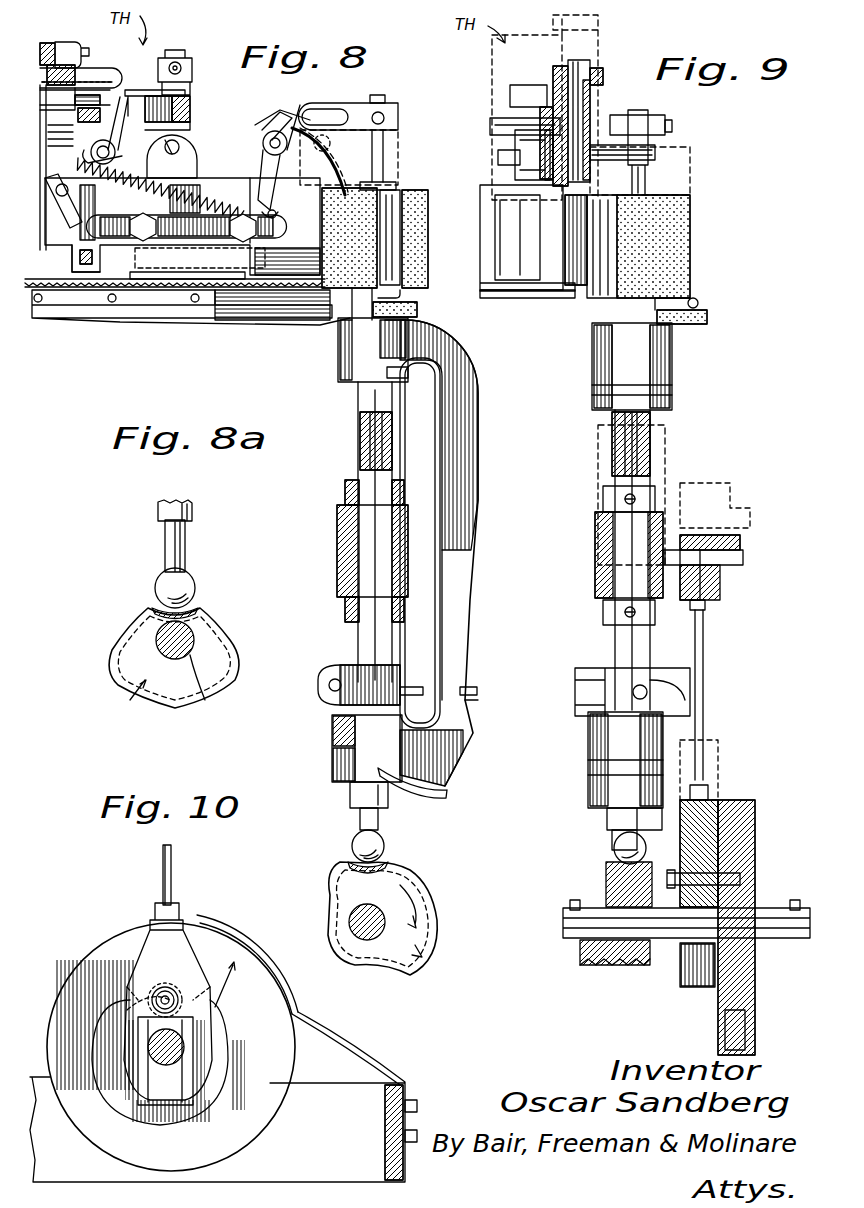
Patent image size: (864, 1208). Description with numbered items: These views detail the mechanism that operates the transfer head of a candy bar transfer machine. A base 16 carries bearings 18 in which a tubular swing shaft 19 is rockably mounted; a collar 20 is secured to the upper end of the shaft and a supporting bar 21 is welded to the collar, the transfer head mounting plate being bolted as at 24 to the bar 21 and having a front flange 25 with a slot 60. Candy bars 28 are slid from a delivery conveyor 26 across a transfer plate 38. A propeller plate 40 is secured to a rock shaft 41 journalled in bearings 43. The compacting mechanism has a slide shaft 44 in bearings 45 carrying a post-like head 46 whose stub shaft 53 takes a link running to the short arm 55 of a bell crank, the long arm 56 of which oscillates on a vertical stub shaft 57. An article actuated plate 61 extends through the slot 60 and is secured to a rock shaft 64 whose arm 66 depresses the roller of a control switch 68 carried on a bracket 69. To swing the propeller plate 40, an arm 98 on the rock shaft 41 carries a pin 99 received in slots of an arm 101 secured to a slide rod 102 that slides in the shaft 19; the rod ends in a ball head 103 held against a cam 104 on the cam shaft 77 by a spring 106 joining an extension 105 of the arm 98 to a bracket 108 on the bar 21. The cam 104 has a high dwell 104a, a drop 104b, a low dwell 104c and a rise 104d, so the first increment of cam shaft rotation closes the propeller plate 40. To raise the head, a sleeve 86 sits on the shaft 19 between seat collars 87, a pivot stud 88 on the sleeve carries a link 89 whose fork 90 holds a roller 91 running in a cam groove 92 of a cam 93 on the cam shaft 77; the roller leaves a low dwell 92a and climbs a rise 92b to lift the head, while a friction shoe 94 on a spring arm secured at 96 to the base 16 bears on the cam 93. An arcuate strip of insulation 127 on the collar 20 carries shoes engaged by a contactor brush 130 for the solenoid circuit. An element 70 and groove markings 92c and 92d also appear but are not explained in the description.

In FIG. 10, the base 16 is at (385, 1140).
In FIG. 8, the bearings 18 is at (340, 340).
In FIG. 9, the bearings 18 is at (672, 358).
In FIG. 8, the tubular swing shaft 19 is at (356, 404).
In FIG. 8A, the tubular swing shaft 19 is at (193, 515).
In FIG. 9, the tubular swing shaft 19 is at (652, 428).
In FIG. 9, the collar 20 is at (592, 290).
In FIG. 8, the supporting bar 21 is at (142, 207).
In FIG. 9, the supporting bar 21 is at (560, 288).
In FIG. 8, the bolts 24 is at (243, 240).
In FIG. 9, the front flange 25 is at (482, 190).
In FIG. 8, the delivery conveyor 26 is at (68, 292).
In FIG. 8, the candy bars 28 is at (178, 296).
In FIG. 8, the transfer plate 38 is at (122, 300).
In FIG. 8, the propeller plate 40 is at (338, 163).
In FIG. 9, the propeller plate 40 is at (490, 126).
In FIG. 8, the rock shaft 41 is at (262, 143).
In FIG. 8, the bearings 43 is at (270, 125).
In FIG. 8, the slide shaft 44 is at (170, 153).
In FIG. 9, the slide shaft 44 is at (498, 160).
In FIG. 8, the bearings 45 is at (158, 137).
In FIG. 9, the bearings 45 is at (512, 142).
In FIG. 8, the post-like head 46 is at (190, 118).
In FIG. 8, the stub shaft 53 is at (170, 48).
In FIG. 8, the short arm of bell crank 55 is at (118, 63).
In FIG. 9, the short arm of bell crank 55 is at (528, 80).
In FIG. 8, the long arm of bell crank 56 is at (91, 106).
In FIG. 9, the long arm of bell crank 56 is at (581, 139).
In FIG. 8, the vertical stub shaft 57 is at (70, 27).
In FIG. 9, the vertical stub shaft 57 is at (580, 70).
In FIG. 9, the slot 60 is at (512, 320).
In FIG. 9, the article actuated plate 61 is at (502, 292).
In FIG. 8, the rock shaft 64 is at (120, 153).
In FIG. 8, the arm 66 is at (103, 145).
In FIG. 8, the control switch 68 is at (190, 100).
In FIG. 8, the bracket 69 is at (148, 90).
In FIG. 8, the clevis 70 is at (328, 676).
In FIG. 9, the clevis 70 is at (580, 688).
In FIG. 8, the cam shaft 77 is at (368, 940).
In FIG. 8A, the cam shaft 77 is at (205, 700).
In FIG. 9, the cam shaft 77 is at (565, 910).
In FIG. 8, the sleeve 86 is at (345, 492).
In FIG. 9, the sleeve 86 is at (603, 498).
In FIG. 8, the seat collars 87 is at (337, 545).
In FIG. 9, the seat collars 87 is at (595, 532).
In FIG. 9, the pivot stud 88 is at (743, 557).
In FIG. 9, the link 89 is at (705, 715).
In FIG. 10, the link 89 is at (170, 878).
In FIG. 9, the fork 90 is at (683, 987).
In FIG. 10, the fork 90 is at (200, 1045).
In FIG. 9, the roller 91 is at (740, 860).
In FIG. 10, the roller 91 is at (243, 955).
In FIG. 10, the cam groove 92 is at (227, 1102).
In FIG. 10, the low dwell 92a is at (215, 1010).
In FIG. 10, the rise 92b is at (245, 1075).
In FIG. 10, the cam recess 92c is at (86, 1112).
In FIG. 10, the cam follower arm 92d is at (150, 930).
In FIG. 9, the cam 93 is at (755, 812).
In FIG. 10, the cam 93 is at (240, 1140).
In FIG. 10, the friction shoe 94 is at (220, 930).
In FIG. 10, the securing point 96 is at (420, 1136).
In FIG. 8, the arm 98 is at (295, 115).
In FIG. 9, the arm 98 is at (645, 115).
In FIG. 8, the pin 99 is at (336, 96).
In FIG. 9, the pin 99 is at (672, 126).
In FIG. 8, the arm 101 is at (398, 120).
In FIG. 9, the arm 101 is at (662, 115).
In FIG. 8, the slide rod 102 is at (378, 100).
In FIG. 8A, the slide rod 102 is at (184, 560).
In FIG. 9, the slide rod 102 is at (615, 430).
In FIG. 8, the ball head 103 is at (380, 845).
In FIG. 8A, the ball head 103 is at (190, 590).
In FIG. 9, the ball head 103 is at (614, 850).
In FIG. 8, the cam 104 is at (415, 955).
In FIG. 8A, the cam 104 is at (130, 700).
In FIG. 9, the cam 104 is at (600, 964).
In FIG. 8, the high dwell 104a is at (437, 910).
In FIG. 8A, the high dwell 104a is at (168, 710).
In FIG. 8, the drop 104b is at (330, 892).
In FIG. 8A, the drop 104b is at (215, 624).
In FIG. 8, the low dwell 104c is at (345, 950).
In FIG. 8A, the low dwell 104c is at (165, 612).
In FIG. 8, the rise 104d is at (395, 968).
In FIG. 8A, the rise 104d is at (138, 622).
In FIG. 8, the extension 105 is at (280, 208).
In FIG. 8, the spring 106 is at (200, 170).
In FIG. 8, the bracket 108 is at (62, 205).
In FIG. 9, the arcuate strip of insulation 127 is at (692, 248).
In FIG. 8, the contactor brush 130 is at (418, 290).
In FIG. 9, the contactor brush 130 is at (700, 303).